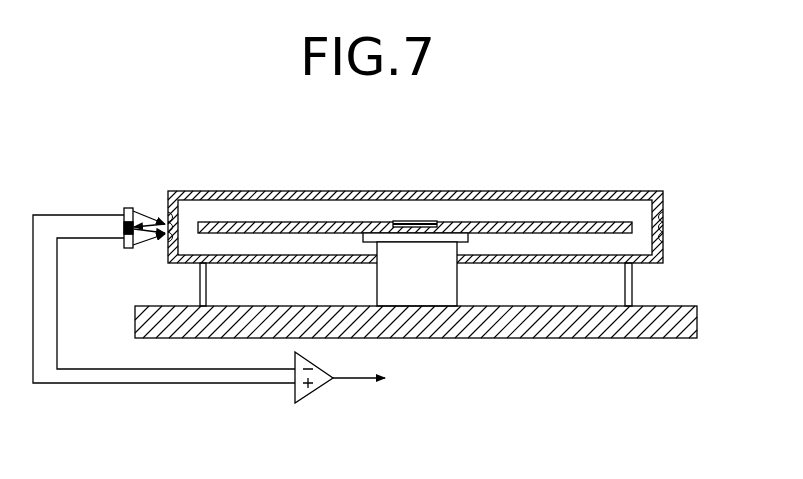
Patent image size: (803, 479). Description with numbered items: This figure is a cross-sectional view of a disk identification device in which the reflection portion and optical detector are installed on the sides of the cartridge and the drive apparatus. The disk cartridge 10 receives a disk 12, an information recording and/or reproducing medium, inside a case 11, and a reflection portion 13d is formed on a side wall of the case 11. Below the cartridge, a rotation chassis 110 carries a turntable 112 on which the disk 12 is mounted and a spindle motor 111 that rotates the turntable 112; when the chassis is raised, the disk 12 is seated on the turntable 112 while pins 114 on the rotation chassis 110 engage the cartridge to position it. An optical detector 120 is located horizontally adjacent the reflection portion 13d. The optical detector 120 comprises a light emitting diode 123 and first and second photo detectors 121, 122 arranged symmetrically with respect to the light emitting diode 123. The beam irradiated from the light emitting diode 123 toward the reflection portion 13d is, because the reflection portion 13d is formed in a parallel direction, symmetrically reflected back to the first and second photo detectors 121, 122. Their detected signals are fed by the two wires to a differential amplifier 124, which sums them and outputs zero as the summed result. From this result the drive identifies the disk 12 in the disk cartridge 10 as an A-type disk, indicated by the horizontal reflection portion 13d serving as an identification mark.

The disk cartridge 10 is at (435, 211).
The case 11 is at (272, 191).
The disk 12 is at (632, 226).
The turntable 112 is at (437, 221).
The spindle motor 111 is at (447, 287).
The pins 114 is at (632, 287).
The reflection portion 13d is at (665, 231).
The rotation chassis 110 is at (580, 329).
The optical detector 120 is at (102, 208).
The first photo detector 121 is at (128, 208).
The second photo detector 122 is at (125, 246).
The light emitting diode 123 is at (124, 224).
The differential amplifier 124 is at (311, 388).